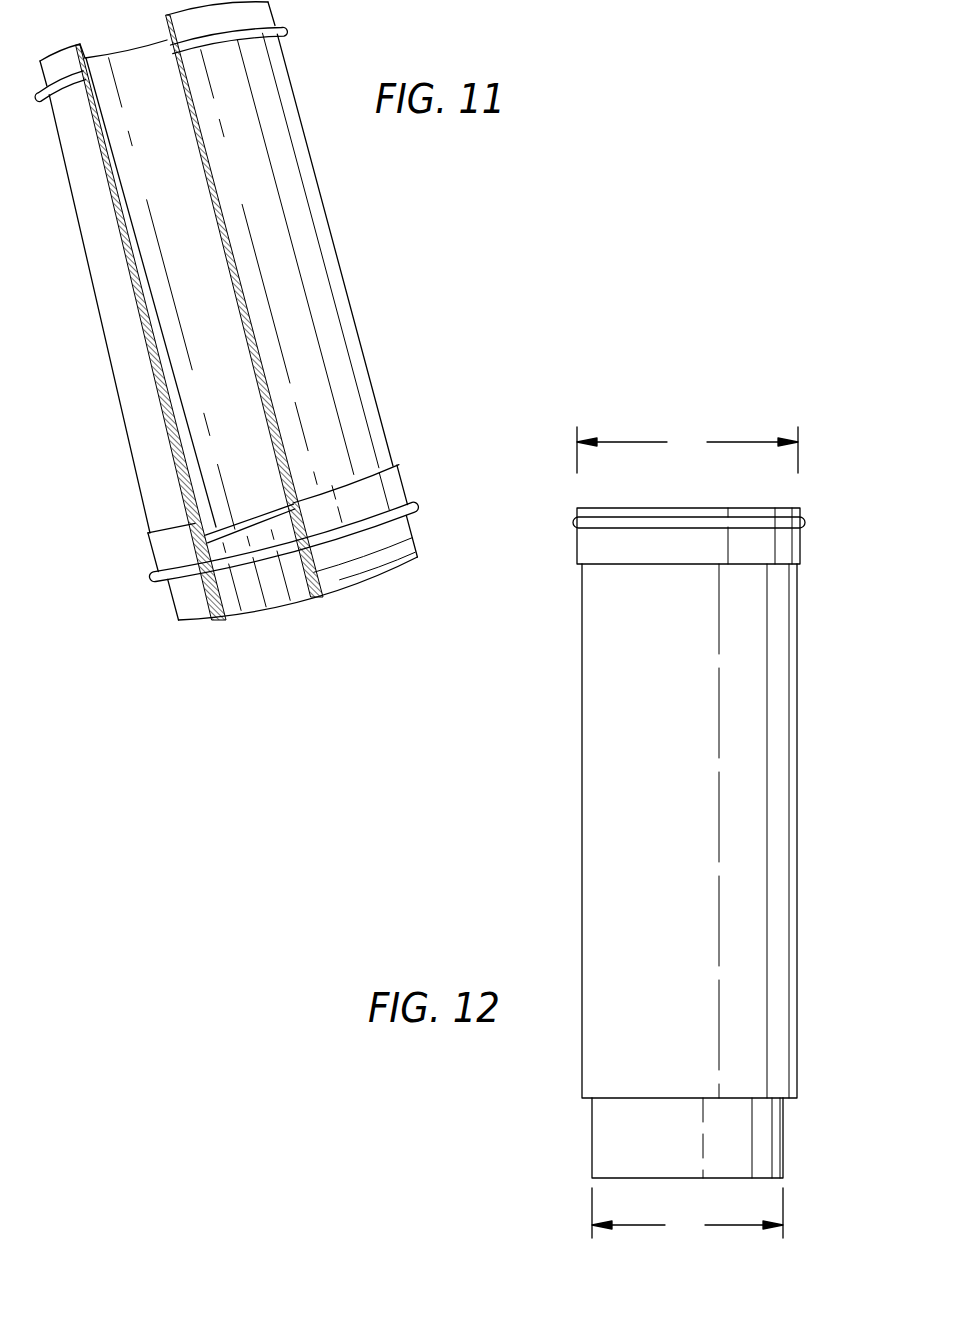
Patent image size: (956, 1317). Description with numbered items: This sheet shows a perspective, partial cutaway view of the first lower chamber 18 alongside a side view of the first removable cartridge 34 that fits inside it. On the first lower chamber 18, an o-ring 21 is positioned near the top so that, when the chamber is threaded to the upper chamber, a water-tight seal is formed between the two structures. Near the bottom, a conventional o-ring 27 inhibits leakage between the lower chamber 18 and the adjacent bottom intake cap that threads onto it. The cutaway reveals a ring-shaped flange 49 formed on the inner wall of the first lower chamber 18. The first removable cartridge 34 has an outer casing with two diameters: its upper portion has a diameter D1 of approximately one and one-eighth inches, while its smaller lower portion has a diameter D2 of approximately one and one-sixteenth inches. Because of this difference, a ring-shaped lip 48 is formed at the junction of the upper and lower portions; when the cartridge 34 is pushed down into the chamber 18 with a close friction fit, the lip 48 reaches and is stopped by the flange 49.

In FIG. 11, the first lower chamber 18 is at (293, 193).
In FIG. 11, the o-ring 21 is at (284, 31).
In FIG. 11, the o-ring 27 is at (408, 511).
In FIG. 11, the ring-shaped flange 49 is at (261, 517).
In FIG. 12, the first removable cartridge 34 is at (617, 892).
In FIG. 12, the ring-shaped lip 48 is at (582, 1100).
In FIG. 12, the diameter of upper portion D1 is at (687, 450).
In FIG. 12, the diameter of lower portion D2 is at (687, 1213).